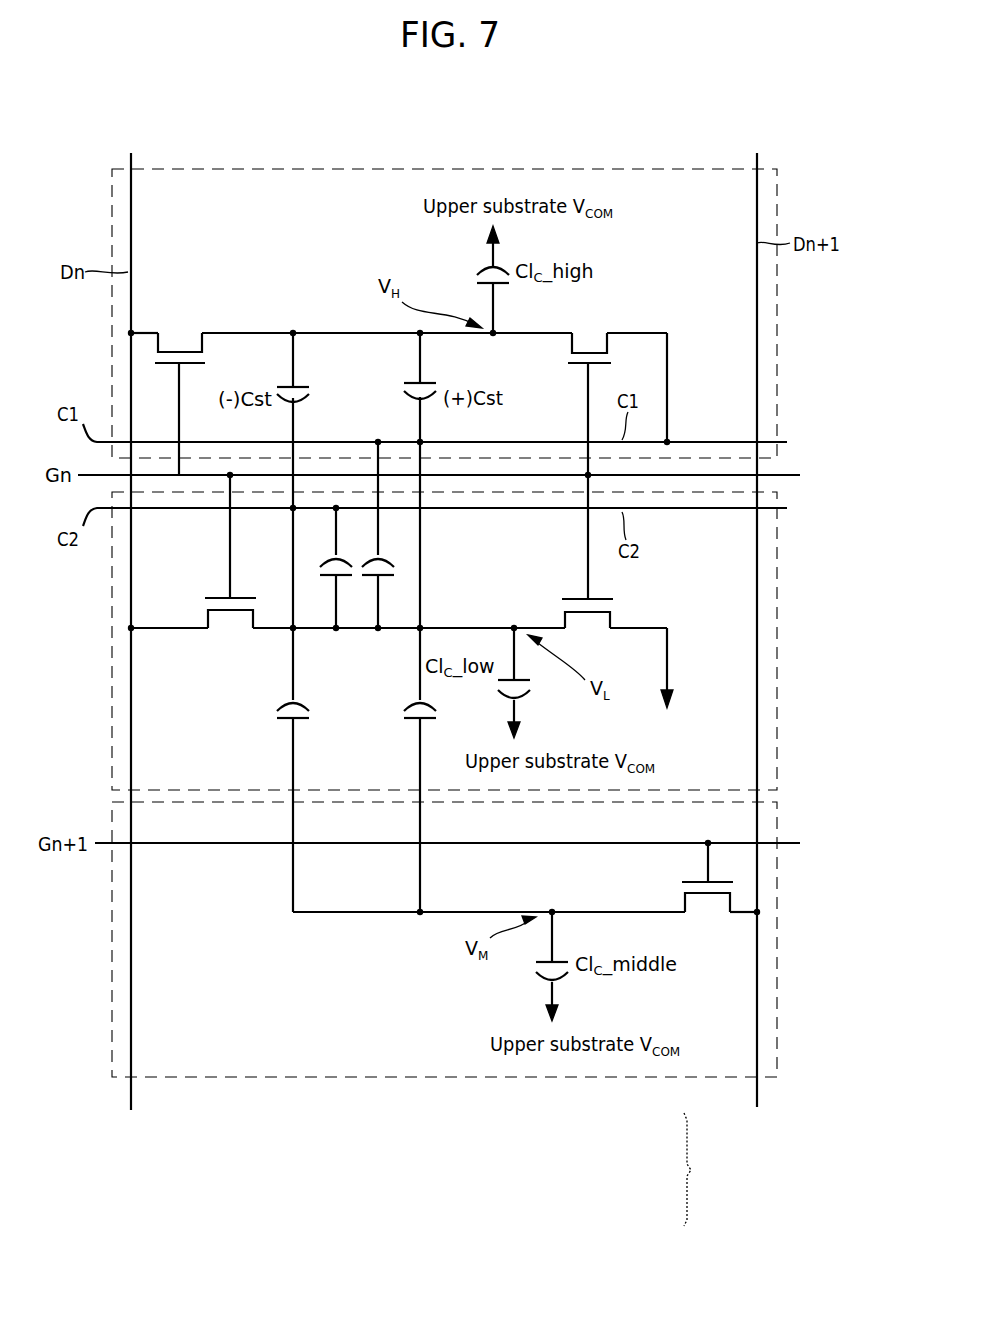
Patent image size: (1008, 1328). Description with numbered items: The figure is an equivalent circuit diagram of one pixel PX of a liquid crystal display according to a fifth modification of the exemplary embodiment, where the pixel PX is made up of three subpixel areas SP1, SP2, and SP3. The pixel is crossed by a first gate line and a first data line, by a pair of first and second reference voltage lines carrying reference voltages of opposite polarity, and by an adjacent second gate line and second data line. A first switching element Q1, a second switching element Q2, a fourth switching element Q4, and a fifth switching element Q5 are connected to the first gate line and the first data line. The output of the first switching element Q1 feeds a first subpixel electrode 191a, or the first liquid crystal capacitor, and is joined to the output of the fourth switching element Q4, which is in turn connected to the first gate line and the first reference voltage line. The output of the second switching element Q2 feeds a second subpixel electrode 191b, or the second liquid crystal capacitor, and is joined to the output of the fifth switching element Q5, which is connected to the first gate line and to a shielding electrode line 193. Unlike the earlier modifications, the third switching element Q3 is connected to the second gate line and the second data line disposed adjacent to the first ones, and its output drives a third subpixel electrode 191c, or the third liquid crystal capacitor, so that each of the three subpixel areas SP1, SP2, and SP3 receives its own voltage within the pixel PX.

The first subpixel electrode 191a is at (480, 290).
The second subpixel electrode 191b is at (527, 669).
The third subpixel electrode 191c is at (540, 960).
The shielding electrode line 193 is at (672, 698).
The first switching element Q1 is at (180, 390).
The second switching element Q2 is at (230, 568).
The third switching element Q3 is at (707, 893).
The fourth switching element Q4 is at (589, 453).
The fifth switching element Q5 is at (587, 629).
The subpixel area SP1 is at (777, 382).
The subpixel area SP2 is at (777, 610).
The subpixel area SP3 is at (777, 955).
The pixel PX is at (682, 1169).